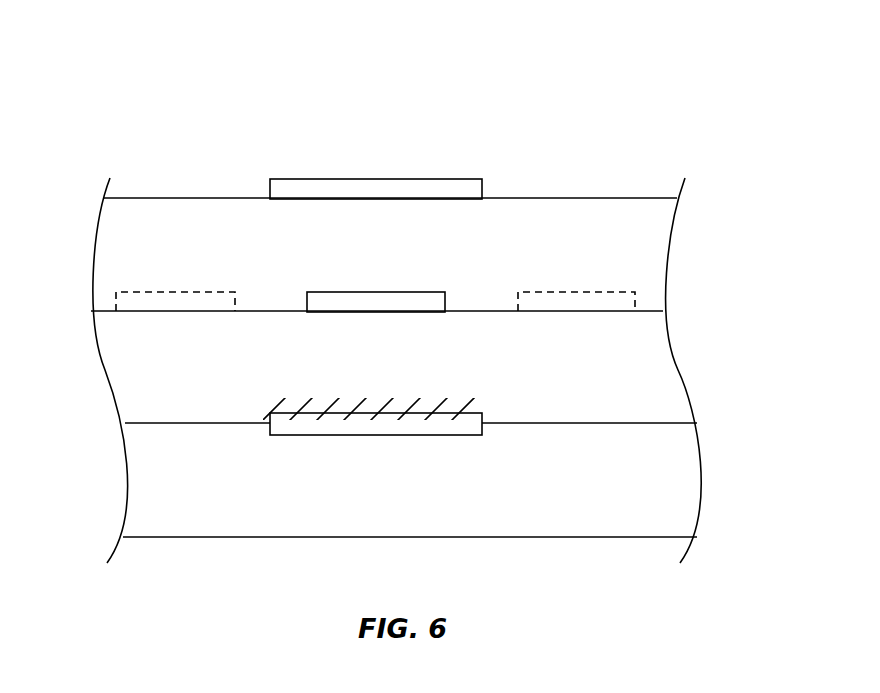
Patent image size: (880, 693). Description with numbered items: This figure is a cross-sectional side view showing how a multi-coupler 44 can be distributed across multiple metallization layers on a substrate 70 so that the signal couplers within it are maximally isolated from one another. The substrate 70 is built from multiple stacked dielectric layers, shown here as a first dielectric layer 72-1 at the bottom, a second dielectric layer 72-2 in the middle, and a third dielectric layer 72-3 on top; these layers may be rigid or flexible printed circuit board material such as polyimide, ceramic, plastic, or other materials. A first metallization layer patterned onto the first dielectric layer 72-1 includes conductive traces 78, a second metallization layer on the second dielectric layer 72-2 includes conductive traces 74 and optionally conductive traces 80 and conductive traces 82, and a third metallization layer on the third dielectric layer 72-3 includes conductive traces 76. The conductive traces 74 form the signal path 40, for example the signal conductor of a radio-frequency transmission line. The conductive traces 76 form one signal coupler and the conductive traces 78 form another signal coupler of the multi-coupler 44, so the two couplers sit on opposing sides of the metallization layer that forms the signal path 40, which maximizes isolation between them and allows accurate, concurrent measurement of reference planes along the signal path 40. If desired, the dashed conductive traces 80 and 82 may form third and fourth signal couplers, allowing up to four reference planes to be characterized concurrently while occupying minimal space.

The multi-coupler 44 is at (576, 69).
The substrate 70 is at (750, 183).
The first dielectric layer 72-1 is at (142, 473).
The second dielectric layer 72-2 is at (123, 368).
The third dielectric layer 72-3 is at (105, 257).
The conductive traces 74 is at (379, 291).
The conductive traces 76 is at (383, 178).
The conductive traces 78 is at (390, 412).
The conductive traces 80 is at (192, 291).
The conductive traces 82 is at (578, 290).
The signal path 40 is at (433, 322).